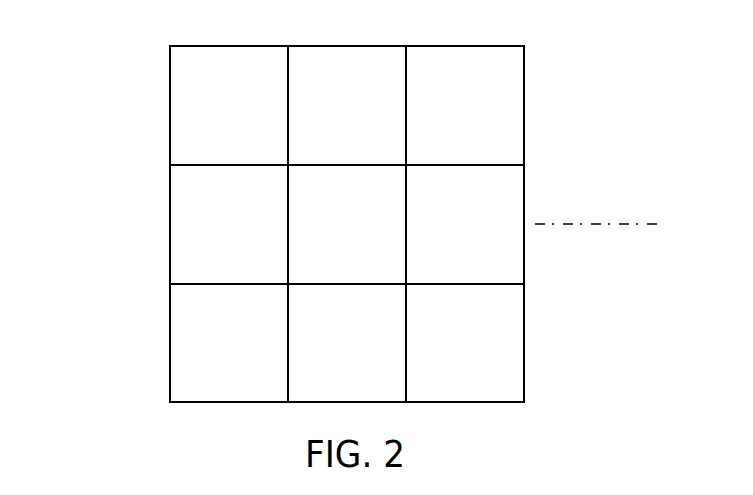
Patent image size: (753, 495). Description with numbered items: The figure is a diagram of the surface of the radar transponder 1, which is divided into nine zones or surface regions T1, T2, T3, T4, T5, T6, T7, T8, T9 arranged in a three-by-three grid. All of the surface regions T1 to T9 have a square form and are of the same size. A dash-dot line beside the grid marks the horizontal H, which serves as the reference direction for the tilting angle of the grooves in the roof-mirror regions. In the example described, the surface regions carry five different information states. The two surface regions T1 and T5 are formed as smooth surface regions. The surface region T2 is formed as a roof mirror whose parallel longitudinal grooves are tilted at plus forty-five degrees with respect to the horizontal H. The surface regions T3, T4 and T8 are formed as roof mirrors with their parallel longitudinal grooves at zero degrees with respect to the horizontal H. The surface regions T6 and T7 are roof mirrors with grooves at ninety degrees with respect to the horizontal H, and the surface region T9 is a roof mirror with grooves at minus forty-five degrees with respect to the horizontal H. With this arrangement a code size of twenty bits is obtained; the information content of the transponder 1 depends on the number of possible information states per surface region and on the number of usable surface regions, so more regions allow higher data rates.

The transponder 1 is at (170, 93).
The horizontal H is at (627, 223).
The surface region T1 is at (212, 122).
The surface region T2 is at (330, 122).
The surface region T3 is at (448, 122).
The surface region T4 is at (212, 239).
The surface region T5 is at (330, 239).
The surface region T6 is at (448, 239).
The surface region T7 is at (212, 358).
The surface region T8 is at (330, 358).
The surface region T9 is at (448, 358).